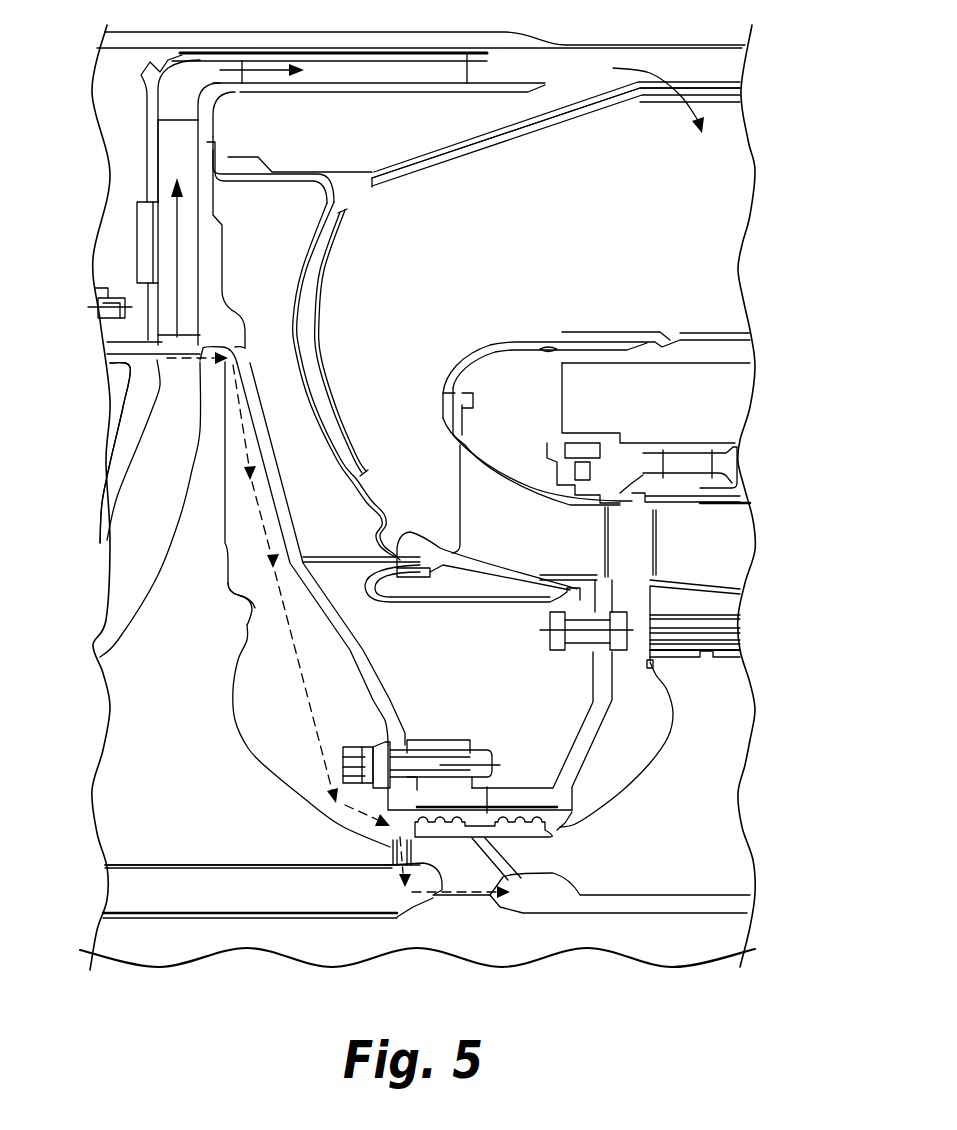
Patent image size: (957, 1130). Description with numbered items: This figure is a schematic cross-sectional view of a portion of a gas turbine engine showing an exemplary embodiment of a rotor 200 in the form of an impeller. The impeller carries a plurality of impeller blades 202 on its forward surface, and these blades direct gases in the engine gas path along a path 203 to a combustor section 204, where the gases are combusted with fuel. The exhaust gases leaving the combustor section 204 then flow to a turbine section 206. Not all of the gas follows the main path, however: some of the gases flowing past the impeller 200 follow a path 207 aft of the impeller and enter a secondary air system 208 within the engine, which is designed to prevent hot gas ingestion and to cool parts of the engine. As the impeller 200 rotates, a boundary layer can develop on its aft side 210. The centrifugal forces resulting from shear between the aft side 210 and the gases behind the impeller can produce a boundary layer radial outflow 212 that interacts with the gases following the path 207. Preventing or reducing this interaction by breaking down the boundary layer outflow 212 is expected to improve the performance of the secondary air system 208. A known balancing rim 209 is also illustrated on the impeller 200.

The rotor 200 is at (127, 745).
The impeller blades 202 is at (127, 575).
The path 203 is at (150, 252).
The combustor section 204 is at (713, 167).
The turbine section 206 is at (700, 792).
The path 207 is at (290, 625).
The secondary air system 208 is at (372, 887).
The balancing rim 209 is at (255, 607).
The aft side 210 is at (223, 516).
The boundary layer radial outflow 212 is at (233, 473).